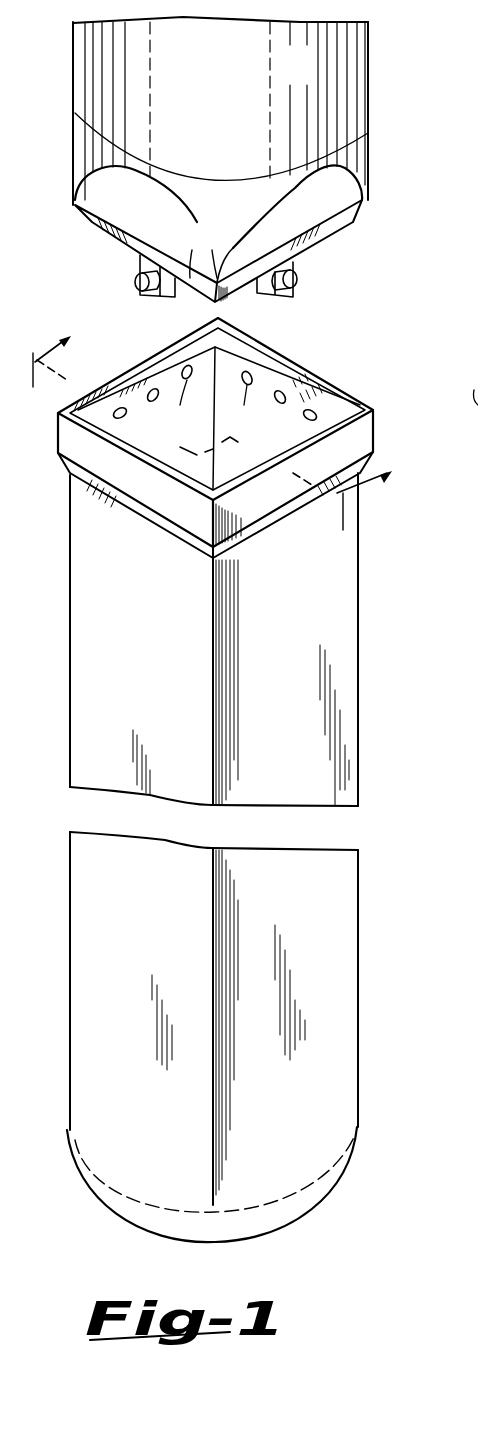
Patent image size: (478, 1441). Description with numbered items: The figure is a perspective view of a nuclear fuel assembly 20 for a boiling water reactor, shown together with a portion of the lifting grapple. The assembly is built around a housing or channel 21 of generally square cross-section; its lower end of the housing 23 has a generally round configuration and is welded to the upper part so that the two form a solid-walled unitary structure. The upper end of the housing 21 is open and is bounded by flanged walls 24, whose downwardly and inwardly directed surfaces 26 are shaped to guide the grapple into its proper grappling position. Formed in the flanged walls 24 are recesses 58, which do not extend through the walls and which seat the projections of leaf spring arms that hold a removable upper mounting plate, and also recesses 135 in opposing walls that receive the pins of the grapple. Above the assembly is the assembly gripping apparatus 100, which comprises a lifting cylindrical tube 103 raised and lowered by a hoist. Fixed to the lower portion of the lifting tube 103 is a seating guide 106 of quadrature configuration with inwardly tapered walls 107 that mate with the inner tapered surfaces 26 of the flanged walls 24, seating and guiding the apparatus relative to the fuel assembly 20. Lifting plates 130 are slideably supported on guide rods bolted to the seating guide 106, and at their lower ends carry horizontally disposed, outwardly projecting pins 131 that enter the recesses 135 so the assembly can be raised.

The assembly gripping apparatus 100 is at (272, 159).
The lifting cylindrical tube 103 is at (312, 80).
The seating guide 106 is at (337, 180).
The inwardly tapered walls 107 is at (247, 275).
The lifting plates 130 is at (138, 265).
The outwardly projecting pins 131 is at (135, 283).
The nuclear fuel assembly 20 is at (249, 428).
The flanged walls 24 is at (75, 398).
The downwardly and inwardly directed surfaces 26 is at (247, 352).
The recesses 135 is at (216, 379).
The recesses 58 is at (128, 414).
The housing or channel 21 is at (212, 880).
The lower end of the housing 23 is at (267, 1236).